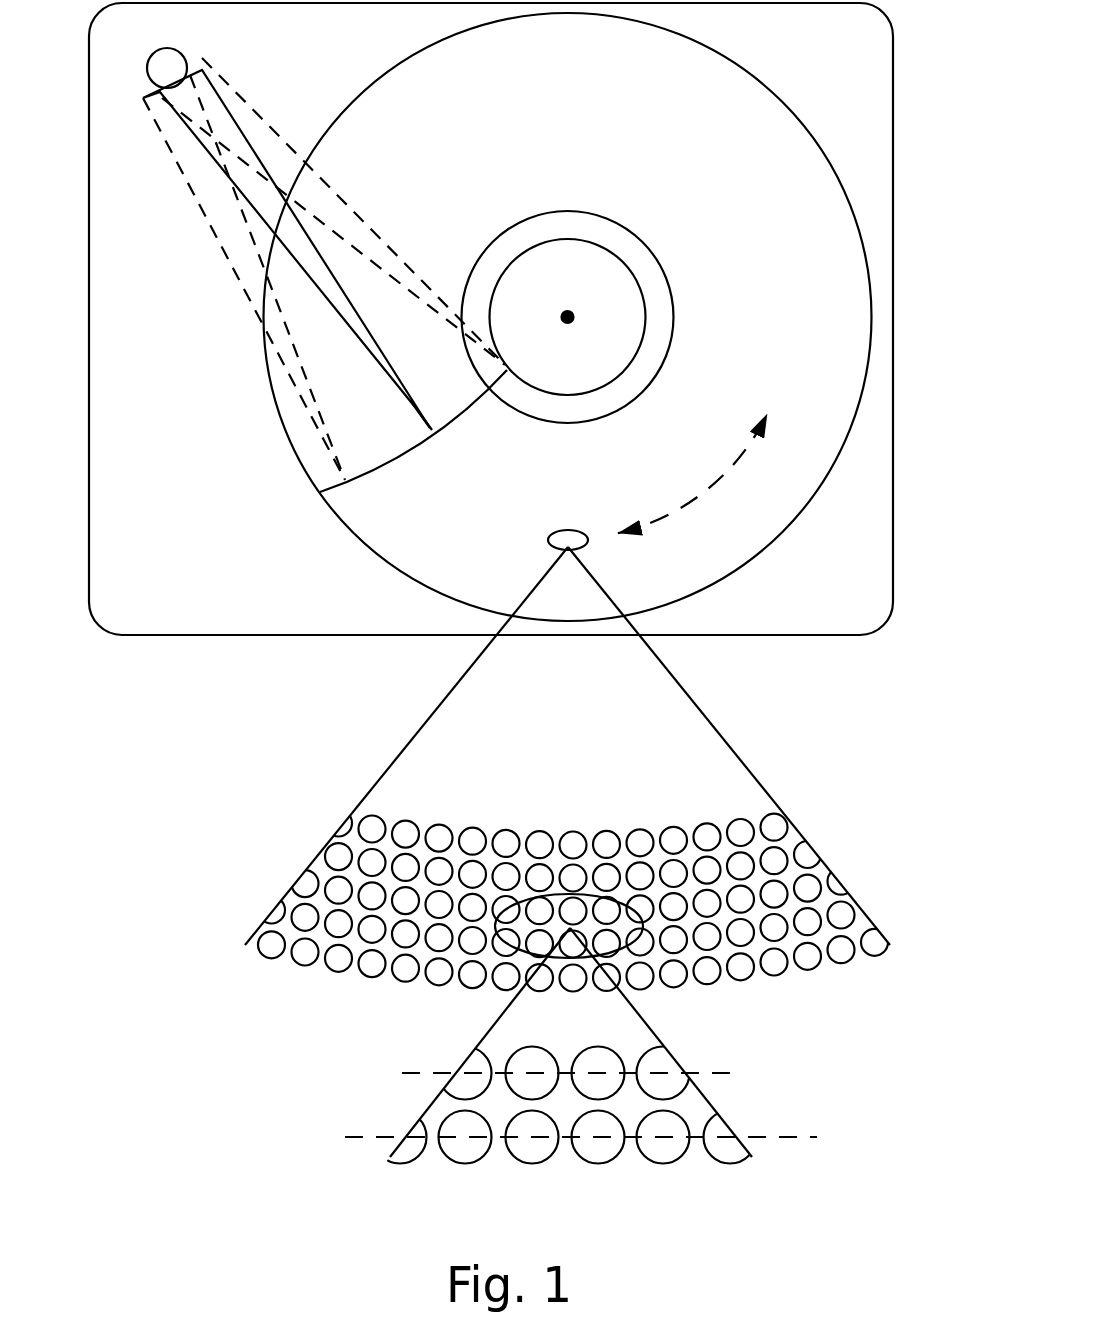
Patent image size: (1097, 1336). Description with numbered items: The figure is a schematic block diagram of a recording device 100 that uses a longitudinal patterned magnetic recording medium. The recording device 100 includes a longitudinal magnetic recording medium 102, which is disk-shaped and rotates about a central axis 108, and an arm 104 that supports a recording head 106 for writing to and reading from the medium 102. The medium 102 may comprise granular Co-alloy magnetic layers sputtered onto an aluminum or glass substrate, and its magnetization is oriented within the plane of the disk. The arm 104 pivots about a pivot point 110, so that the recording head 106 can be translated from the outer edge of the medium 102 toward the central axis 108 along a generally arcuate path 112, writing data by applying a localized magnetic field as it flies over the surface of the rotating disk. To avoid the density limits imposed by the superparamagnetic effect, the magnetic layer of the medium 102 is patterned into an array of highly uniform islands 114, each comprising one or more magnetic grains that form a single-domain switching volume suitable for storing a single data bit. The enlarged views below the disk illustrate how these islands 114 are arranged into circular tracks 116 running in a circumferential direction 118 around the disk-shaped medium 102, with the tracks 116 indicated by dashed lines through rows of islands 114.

The recording device 100 is at (859, 46).
The longitudinal magnetic recording medium 102 is at (734, 184).
The arm 104 is at (317, 273).
The recording head 106 is at (418, 408).
The central axis 108 is at (572, 314).
The pivot point 110 is at (170, 68).
The arcuate path 112 is at (390, 462).
The islands 114 is at (665, 1152).
The circular tracks 116 is at (765, 1130).
The circumferential direction 118 is at (707, 488).